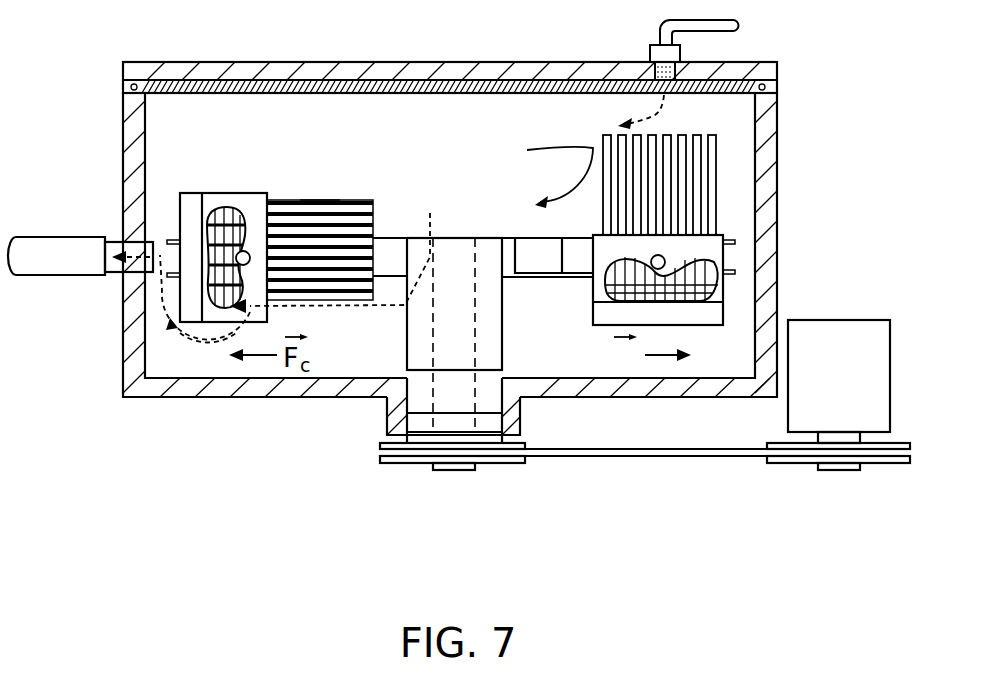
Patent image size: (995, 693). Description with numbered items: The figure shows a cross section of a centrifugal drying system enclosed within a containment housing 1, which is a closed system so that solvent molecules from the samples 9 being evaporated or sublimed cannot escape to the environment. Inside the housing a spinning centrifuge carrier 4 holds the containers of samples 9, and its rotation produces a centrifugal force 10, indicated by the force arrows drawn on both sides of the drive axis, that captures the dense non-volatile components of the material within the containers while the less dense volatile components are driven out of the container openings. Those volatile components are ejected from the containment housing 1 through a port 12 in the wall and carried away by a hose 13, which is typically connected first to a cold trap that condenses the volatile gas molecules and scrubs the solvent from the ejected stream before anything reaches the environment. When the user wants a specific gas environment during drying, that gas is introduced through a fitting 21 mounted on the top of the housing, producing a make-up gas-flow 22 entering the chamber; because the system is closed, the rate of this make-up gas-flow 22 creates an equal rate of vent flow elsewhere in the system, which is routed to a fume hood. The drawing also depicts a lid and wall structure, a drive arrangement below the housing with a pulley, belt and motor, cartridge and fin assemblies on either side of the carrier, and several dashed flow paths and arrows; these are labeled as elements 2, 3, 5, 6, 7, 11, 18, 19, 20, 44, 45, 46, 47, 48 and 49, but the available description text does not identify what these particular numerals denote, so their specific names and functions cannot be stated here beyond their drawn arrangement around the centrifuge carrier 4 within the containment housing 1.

The containment housing 1 is at (124, 112).
The lid 2 is at (183, 62).
The lid seal layer 3 is at (444, 93).
The centrifuge carrier 4 is at (578, 236).
The pulley 5 is at (383, 446).
The belt 6 is at (590, 449).
The motor 7 is at (788, 430).
The samples 9 is at (222, 207).
The centrifugal force 10 is at (600, 347).
The shaft coupling 11 is at (527, 250).
The port 12 is at (155, 240).
The hose 13 is at (42, 240).
The flow path 18 is at (333, 308).
The flow path return 19 is at (203, 342).
The circulation path 20 is at (162, 293).
The fitting 21 is at (648, 55).
The gas-flow 22 is at (660, 113).
The cooling fins 44 is at (603, 137).
The flow direction arrow 45 is at (542, 172).
The rotor 46 is at (316, 187).
The first cartridge 47 is at (258, 193).
The filter insert 48 is at (226, 207).
The fin stack 49 is at (363, 200).